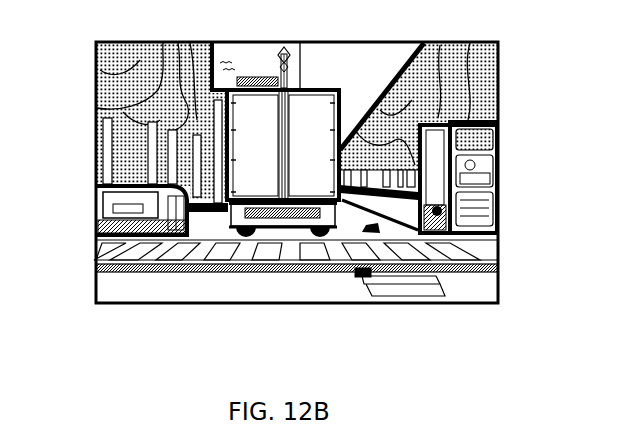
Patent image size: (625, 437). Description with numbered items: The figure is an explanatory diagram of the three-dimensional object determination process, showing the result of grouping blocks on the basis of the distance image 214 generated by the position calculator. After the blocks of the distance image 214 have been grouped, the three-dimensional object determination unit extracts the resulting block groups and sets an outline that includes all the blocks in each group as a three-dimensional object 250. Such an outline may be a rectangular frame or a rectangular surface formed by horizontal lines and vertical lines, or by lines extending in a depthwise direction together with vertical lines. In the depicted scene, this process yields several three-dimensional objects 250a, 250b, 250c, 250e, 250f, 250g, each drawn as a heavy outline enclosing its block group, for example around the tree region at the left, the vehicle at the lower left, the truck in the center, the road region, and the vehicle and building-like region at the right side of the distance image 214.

The distance image 214 is at (418, 33).
The three-dimensional object 250 is at (302, 208).
The three-dimensional object 250a is at (96, 113).
The three-dimensional object 250b is at (118, 268).
The three-dimensional object 250c is at (165, 238).
The three-dimensional object 250e is at (432, 242).
The three-dimensional object 250f is at (472, 243).
The three-dimensional object 250g is at (500, 103).